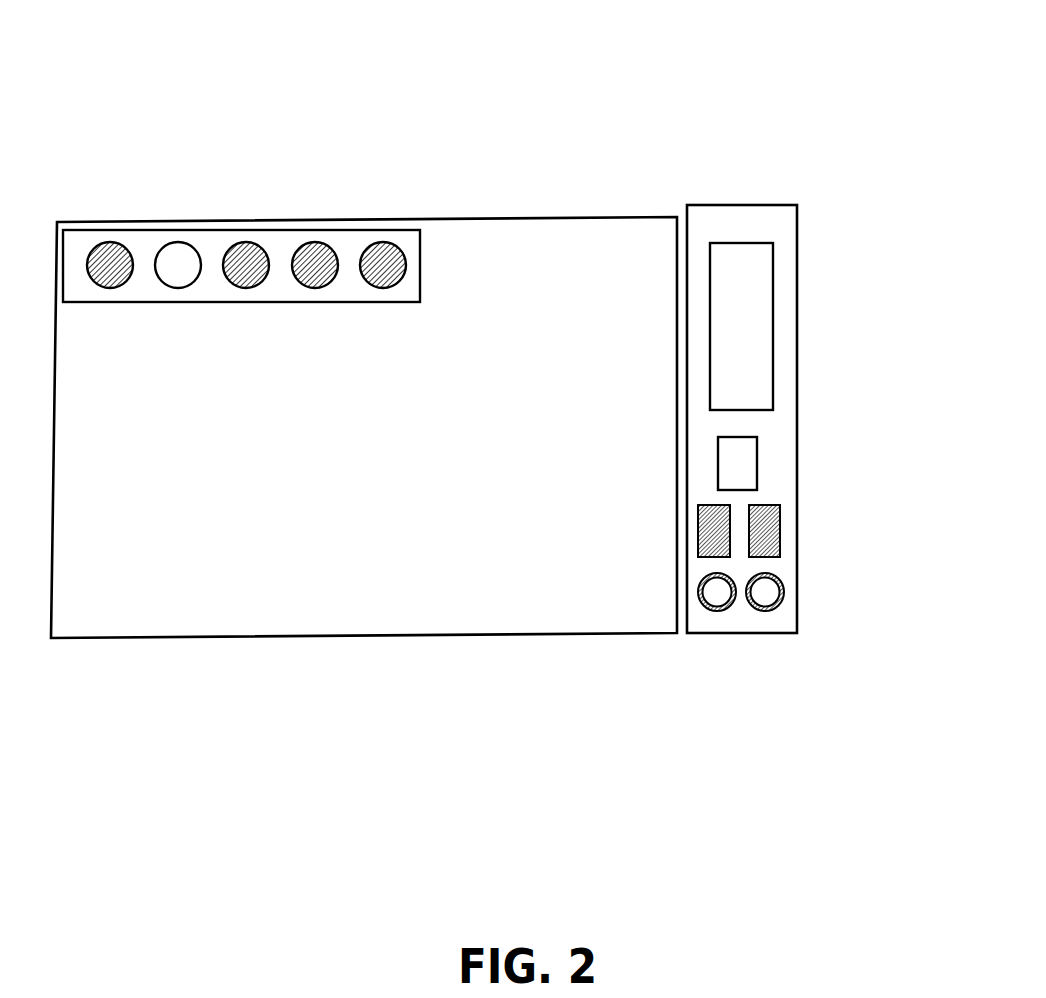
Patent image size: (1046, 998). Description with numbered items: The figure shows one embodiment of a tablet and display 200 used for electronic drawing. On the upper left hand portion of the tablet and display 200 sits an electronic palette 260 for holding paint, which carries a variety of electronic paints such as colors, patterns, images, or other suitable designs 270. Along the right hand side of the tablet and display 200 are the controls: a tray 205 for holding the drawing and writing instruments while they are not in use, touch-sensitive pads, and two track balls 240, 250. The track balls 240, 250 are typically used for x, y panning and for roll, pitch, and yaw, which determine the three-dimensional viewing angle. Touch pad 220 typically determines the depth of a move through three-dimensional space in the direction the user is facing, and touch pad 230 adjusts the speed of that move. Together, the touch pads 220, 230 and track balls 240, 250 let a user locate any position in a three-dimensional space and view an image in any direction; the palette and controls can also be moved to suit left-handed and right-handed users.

The tablet and display 200 is at (745, 120).
The tray 205 is at (765, 378).
The touch pad 220 is at (730, 508).
The touch pad 230 is at (778, 543).
The track ball 240 is at (717, 610).
The track ball 250 is at (777, 603).
The electronic palette 260 is at (290, 238).
The electronic paints 270 is at (393, 238).